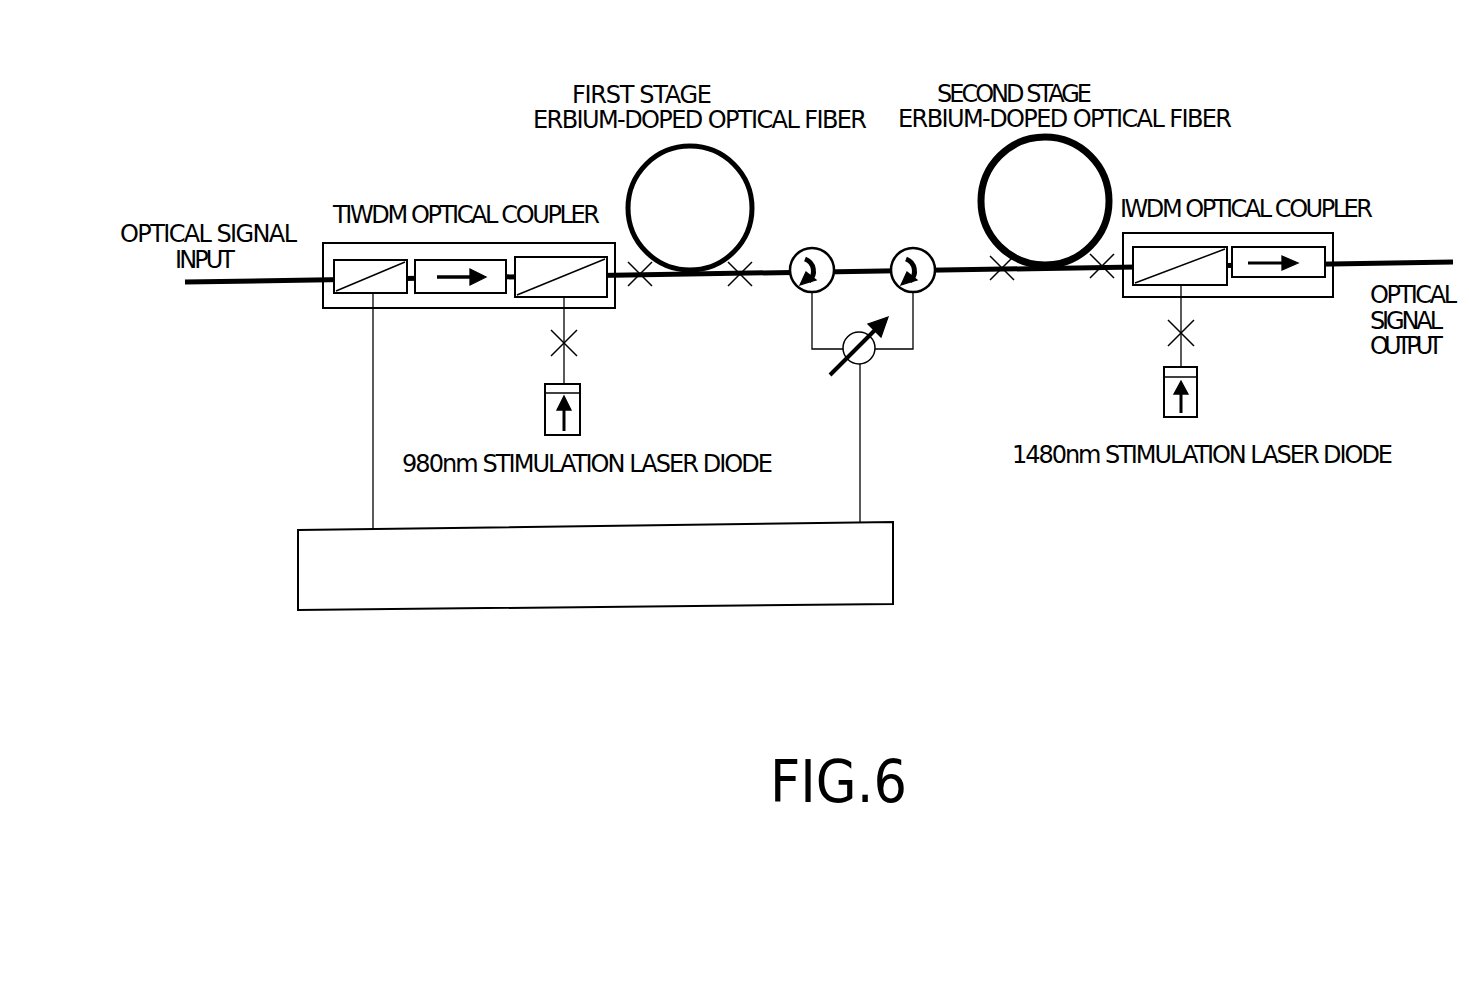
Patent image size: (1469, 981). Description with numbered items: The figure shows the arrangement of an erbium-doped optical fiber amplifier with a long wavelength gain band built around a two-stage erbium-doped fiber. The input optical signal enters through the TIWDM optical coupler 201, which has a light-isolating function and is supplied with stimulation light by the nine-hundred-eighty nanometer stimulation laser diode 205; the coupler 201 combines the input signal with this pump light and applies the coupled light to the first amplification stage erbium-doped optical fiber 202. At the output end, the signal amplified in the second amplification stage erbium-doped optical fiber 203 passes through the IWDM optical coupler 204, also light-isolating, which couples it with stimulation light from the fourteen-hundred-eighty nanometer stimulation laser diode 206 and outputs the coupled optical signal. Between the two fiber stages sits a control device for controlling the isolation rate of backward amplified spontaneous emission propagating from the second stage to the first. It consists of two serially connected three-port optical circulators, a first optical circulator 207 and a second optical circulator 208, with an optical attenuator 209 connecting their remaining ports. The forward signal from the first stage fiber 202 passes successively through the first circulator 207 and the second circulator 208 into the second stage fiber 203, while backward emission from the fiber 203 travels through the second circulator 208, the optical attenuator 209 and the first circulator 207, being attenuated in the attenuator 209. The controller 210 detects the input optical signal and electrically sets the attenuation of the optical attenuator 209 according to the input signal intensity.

The TIWDM optical coupler 201 is at (463, 302).
The first amplification stage erbium-doped optical fiber 202 is at (637, 176).
The second amplification stage erbium-doped optical fiber 203 is at (1108, 178).
The IWDM optical coupler 204 is at (1235, 297).
The 980 nm stimulation laser diode 205 is at (545, 405).
The 1480 nm stimulation laser diode 206 is at (1163, 372).
The first optical circulator 207 is at (812, 246).
The second optical circulator 208 is at (913, 246).
The optical attenuator 209 is at (878, 356).
The controller 210 is at (648, 608).